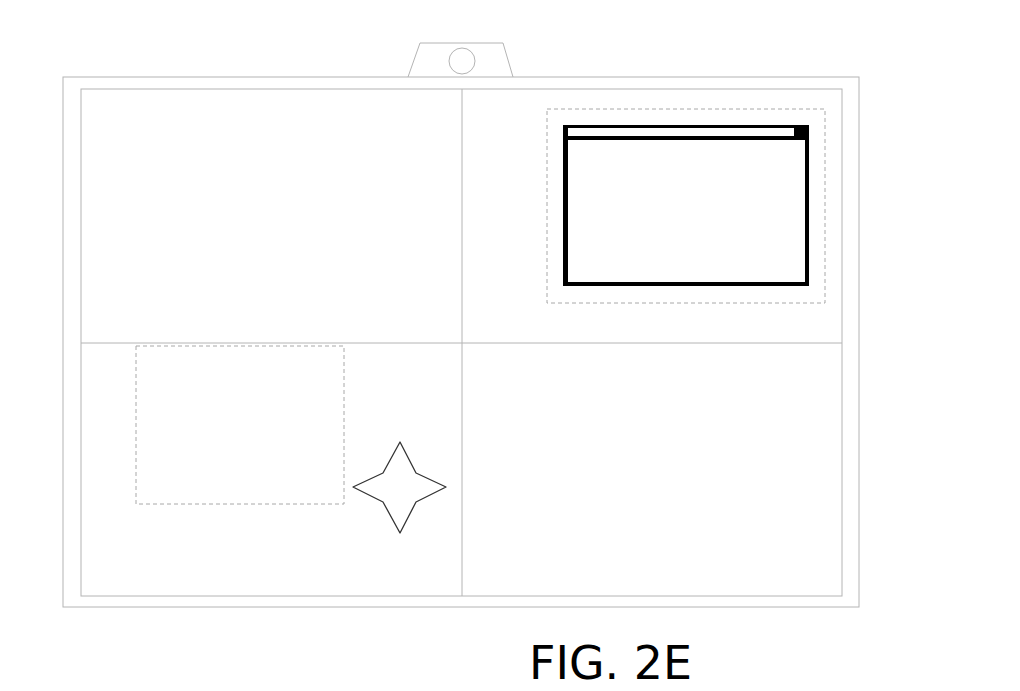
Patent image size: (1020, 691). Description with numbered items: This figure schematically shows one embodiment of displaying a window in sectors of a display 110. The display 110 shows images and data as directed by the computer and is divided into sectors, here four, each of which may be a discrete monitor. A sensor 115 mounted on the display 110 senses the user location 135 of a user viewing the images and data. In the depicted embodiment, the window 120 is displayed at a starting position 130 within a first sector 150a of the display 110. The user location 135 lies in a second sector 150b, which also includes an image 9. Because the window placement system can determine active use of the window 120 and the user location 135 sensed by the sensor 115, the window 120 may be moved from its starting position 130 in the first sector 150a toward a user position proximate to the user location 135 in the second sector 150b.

The display 110 is at (145, 78).
The sensor 115 is at (485, 43).
The window 120 is at (713, 125).
The starting position 130 is at (805, 303).
The user location 135 is at (136, 425).
The first sector 150a is at (546, 336).
The second sector 150b is at (437, 572).
The image 9 is at (393, 498).